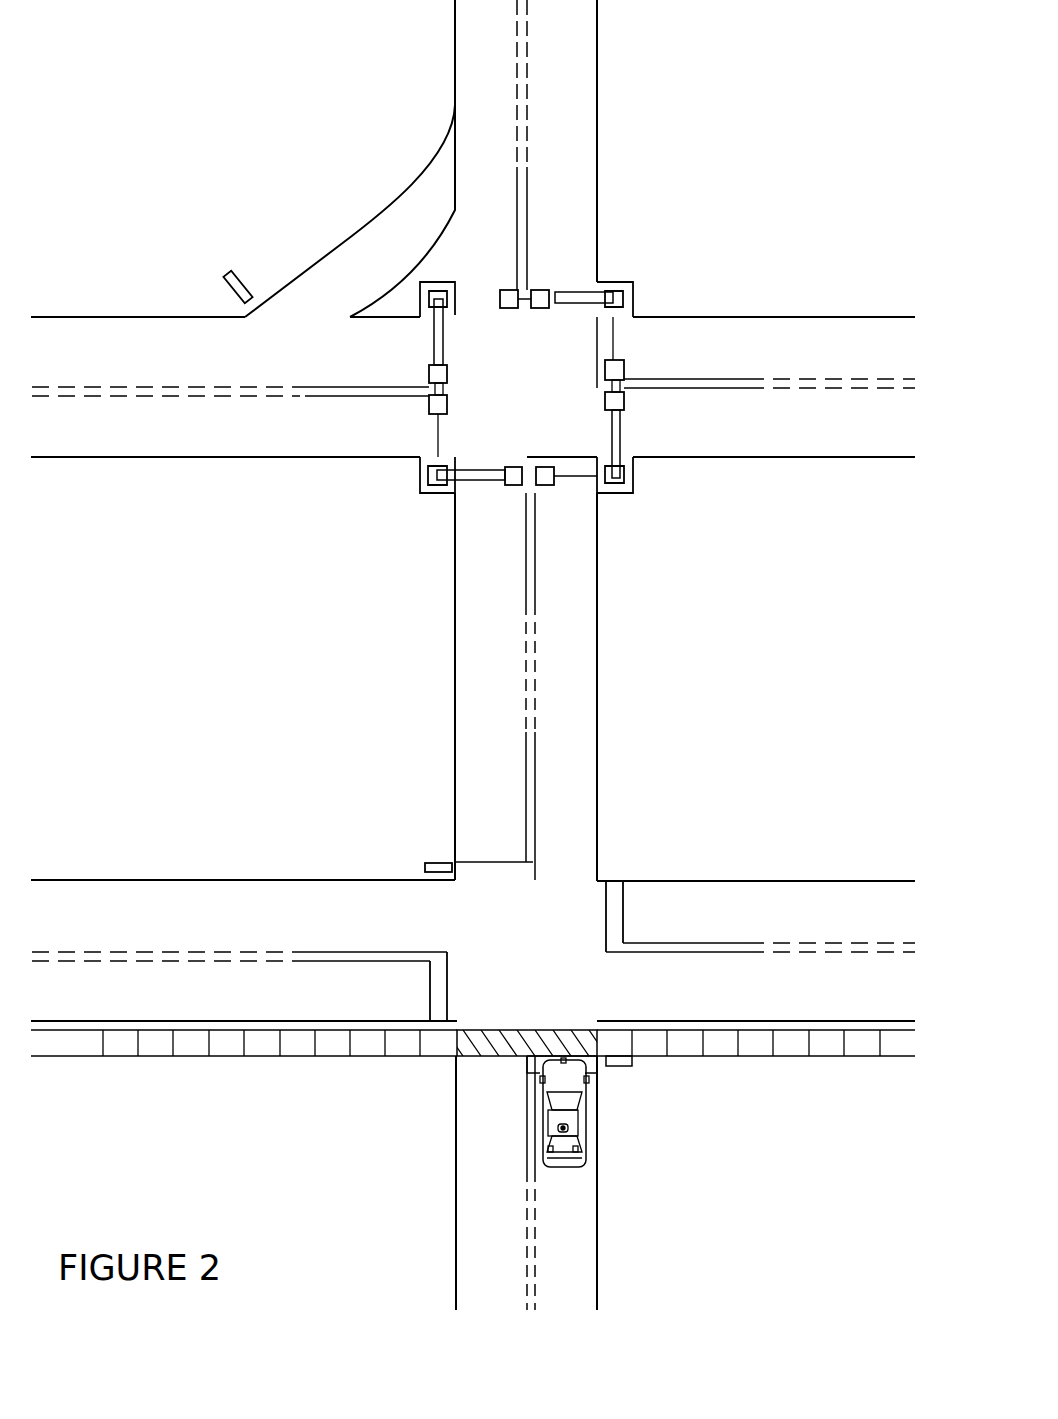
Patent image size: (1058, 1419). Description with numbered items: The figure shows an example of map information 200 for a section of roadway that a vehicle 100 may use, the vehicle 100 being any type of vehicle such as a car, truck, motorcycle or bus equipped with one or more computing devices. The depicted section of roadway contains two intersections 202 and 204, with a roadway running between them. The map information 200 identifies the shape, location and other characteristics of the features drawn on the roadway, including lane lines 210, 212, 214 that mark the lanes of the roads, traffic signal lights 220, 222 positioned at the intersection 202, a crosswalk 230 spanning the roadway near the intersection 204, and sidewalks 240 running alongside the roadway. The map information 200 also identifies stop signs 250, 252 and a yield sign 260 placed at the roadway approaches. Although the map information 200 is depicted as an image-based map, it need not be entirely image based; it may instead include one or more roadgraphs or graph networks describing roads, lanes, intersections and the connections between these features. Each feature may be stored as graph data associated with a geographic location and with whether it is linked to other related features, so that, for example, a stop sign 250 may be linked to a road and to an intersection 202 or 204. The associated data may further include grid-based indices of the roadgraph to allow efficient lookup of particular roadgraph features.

The vehicle 100 is at (582, 1166).
The map information 200 is at (118, 1228).
The intersection 202 is at (526, 387).
The intersection 204 is at (714, 931).
The lane line 210 is at (102, 961).
The lane line 212 is at (188, 1022).
The lane line 214 is at (527, 70).
The traffic signal light 220 is at (427, 405).
The traffic signal light 222 is at (427, 369).
The crosswalk 230 is at (452, 1038).
The sidewalk 240 is at (752, 1030).
The stop sign 250 is at (437, 862).
The stop sign 252 is at (632, 1067).
The yield sign 260 is at (218, 284).